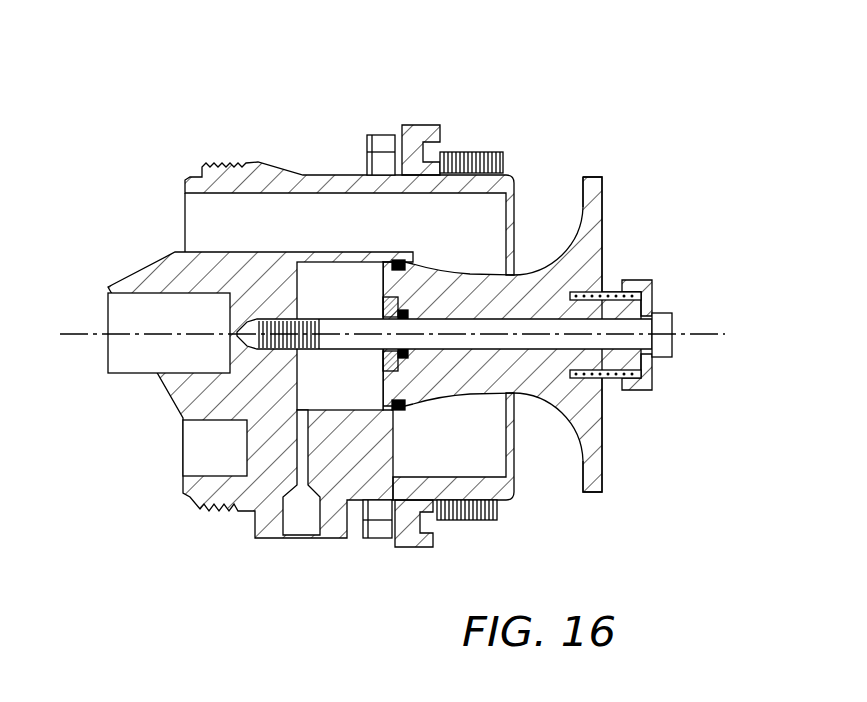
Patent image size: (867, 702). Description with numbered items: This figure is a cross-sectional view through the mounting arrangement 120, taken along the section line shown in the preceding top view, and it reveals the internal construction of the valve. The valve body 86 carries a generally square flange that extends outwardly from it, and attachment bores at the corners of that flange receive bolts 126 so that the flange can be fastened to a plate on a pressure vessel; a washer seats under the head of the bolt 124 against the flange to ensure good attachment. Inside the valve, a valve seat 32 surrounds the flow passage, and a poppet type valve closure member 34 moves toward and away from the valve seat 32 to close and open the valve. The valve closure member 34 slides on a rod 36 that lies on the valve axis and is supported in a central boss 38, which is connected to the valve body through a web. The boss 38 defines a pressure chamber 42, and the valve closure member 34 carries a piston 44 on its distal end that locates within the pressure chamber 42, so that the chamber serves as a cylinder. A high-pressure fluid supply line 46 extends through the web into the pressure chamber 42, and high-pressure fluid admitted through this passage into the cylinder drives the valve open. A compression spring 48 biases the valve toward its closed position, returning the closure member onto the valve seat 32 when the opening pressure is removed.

The mounting arrangement 120 is at (603, 131).
The valve body 86 is at (261, 170).
The pressure chamber 42 is at (323, 278).
The bolts 126 is at (382, 150).
The bolt 124 is at (465, 158).
The poppet type valve closure member 34 is at (593, 203).
The rod 36 is at (665, 314).
The compression spring 48 is at (610, 380).
The central boss 38 is at (173, 392).
The high-pressure fluid supply line 46 is at (295, 467).
The piston 44 is at (385, 402).
The valve seat 32 is at (516, 487).